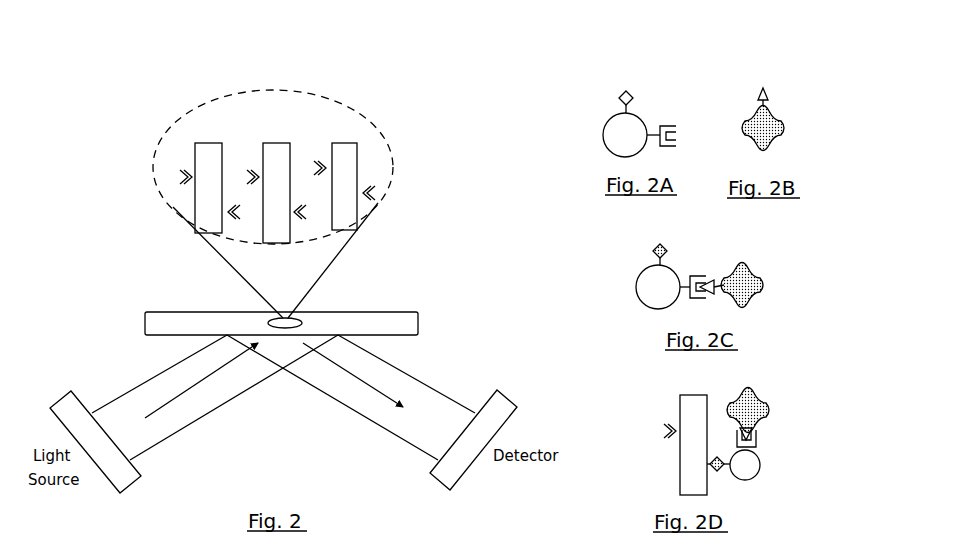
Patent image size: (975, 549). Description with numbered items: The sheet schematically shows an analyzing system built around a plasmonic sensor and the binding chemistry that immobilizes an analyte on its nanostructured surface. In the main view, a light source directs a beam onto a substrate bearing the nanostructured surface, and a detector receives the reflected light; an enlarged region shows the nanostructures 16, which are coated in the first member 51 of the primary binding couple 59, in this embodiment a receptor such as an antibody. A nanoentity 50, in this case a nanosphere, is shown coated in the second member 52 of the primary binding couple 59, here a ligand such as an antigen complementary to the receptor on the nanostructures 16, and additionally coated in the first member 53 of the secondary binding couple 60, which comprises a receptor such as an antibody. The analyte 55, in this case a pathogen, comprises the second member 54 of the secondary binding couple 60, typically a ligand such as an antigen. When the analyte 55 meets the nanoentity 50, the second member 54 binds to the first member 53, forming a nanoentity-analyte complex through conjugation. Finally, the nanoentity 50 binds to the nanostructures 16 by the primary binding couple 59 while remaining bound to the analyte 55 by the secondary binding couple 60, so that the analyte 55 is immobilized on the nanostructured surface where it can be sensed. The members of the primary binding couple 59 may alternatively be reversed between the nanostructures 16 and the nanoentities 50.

In FIG. 2, the nanostructures 16 is at (338, 143).
In FIG. 2D, the nanostructures 16 is at (683, 395).
In FIG. 2A, the nanoentity 50 is at (603, 135).
In FIG. 2C, the nanoentity 50 is at (637, 292).
In FIG. 2, the first member of primary binding couple 51 is at (186, 177).
In FIG. 2D, the first member of primary binding couple 51 is at (672, 432).
In FIG. 2A, the second member of primary binding couple 52 is at (630, 90).
In FIG. 2C, the second member of primary binding couple 52 is at (657, 245).
In FIG. 2A, the first member of secondary binding couple 53 is at (664, 124).
In FIG. 2B, the second member of secondary binding couple 54 is at (766, 92).
In FIG. 2B, the analyte 55 is at (787, 128).
In FIG. 2C, the analyte 55 is at (765, 282).
In FIG. 2D, the analyte 55 is at (753, 397).
In FIG. 2D, the primary binding couple 59 is at (718, 472).
In FIG. 2C, the secondary binding couple 60 is at (700, 297).
In FIG. 2D, the secondary binding couple 60 is at (757, 436).